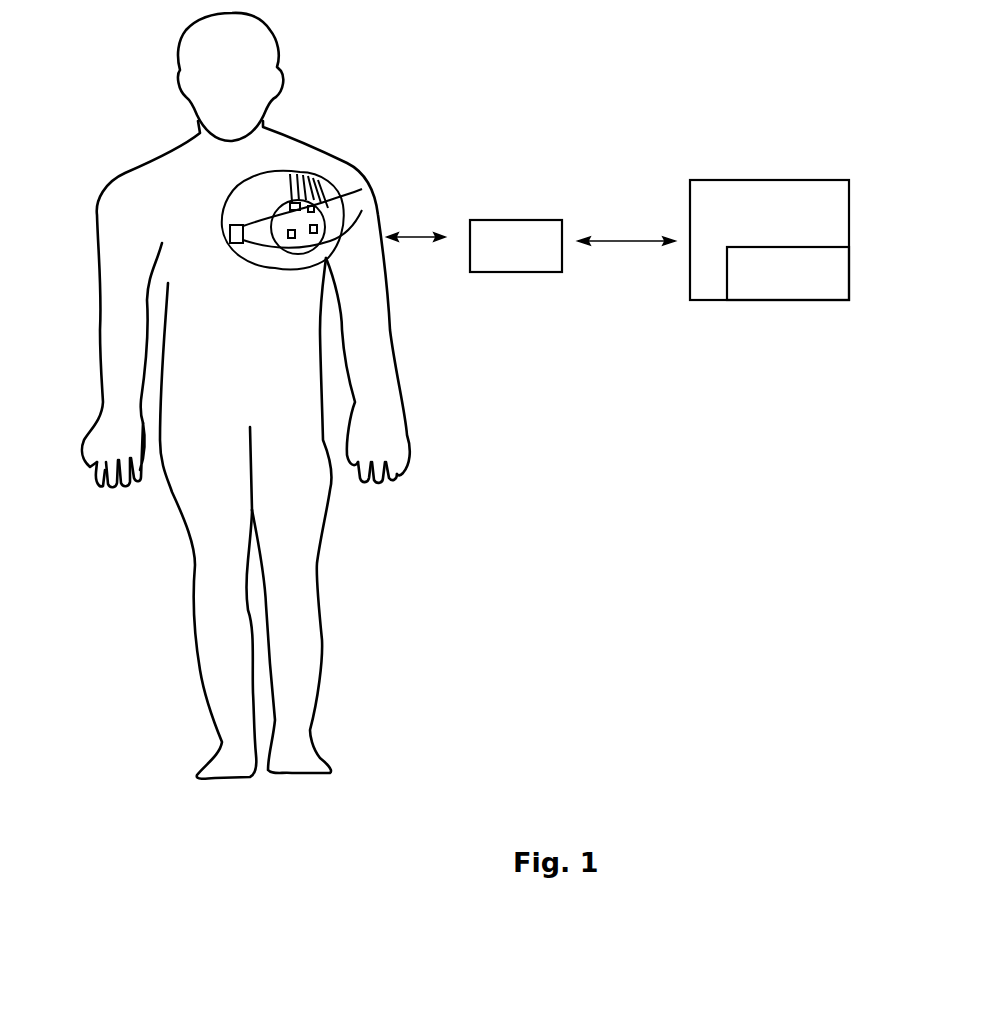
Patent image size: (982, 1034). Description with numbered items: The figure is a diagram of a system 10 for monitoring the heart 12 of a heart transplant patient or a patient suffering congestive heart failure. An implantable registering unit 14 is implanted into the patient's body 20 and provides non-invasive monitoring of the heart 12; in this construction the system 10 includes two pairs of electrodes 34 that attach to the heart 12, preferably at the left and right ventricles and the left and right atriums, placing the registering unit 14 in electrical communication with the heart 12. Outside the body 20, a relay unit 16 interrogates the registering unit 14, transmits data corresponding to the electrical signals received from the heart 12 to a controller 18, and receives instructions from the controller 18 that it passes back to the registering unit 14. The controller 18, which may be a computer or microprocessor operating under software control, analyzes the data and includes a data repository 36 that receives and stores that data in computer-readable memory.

The system 10 is at (672, 110).
The heart 12 is at (317, 240).
The implantable registering unit 14 is at (228, 229).
The relay unit 16 is at (560, 272).
The controller 18 is at (822, 182).
The patient's body 20 is at (168, 489).
The electrodes 34 is at (243, 229).
The data repository 36 is at (793, 298).